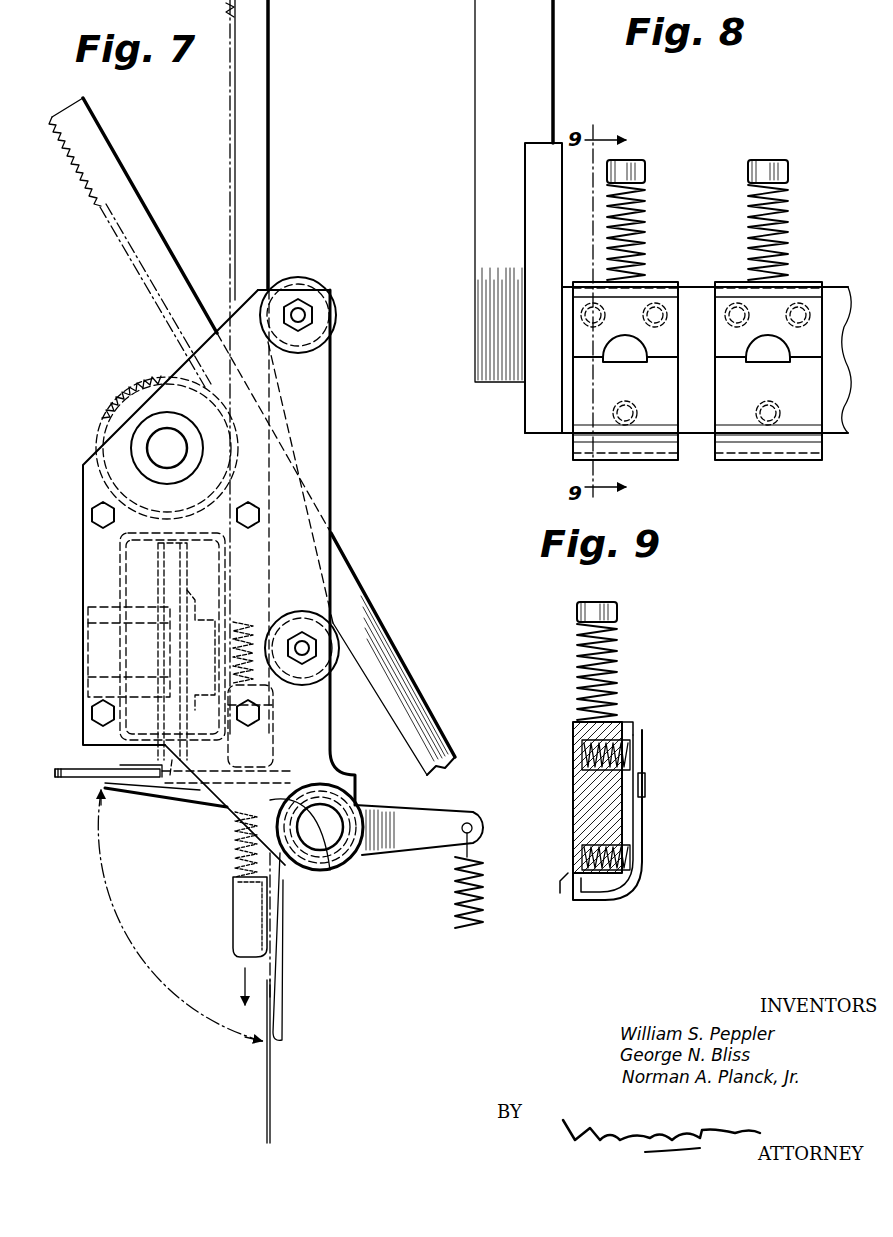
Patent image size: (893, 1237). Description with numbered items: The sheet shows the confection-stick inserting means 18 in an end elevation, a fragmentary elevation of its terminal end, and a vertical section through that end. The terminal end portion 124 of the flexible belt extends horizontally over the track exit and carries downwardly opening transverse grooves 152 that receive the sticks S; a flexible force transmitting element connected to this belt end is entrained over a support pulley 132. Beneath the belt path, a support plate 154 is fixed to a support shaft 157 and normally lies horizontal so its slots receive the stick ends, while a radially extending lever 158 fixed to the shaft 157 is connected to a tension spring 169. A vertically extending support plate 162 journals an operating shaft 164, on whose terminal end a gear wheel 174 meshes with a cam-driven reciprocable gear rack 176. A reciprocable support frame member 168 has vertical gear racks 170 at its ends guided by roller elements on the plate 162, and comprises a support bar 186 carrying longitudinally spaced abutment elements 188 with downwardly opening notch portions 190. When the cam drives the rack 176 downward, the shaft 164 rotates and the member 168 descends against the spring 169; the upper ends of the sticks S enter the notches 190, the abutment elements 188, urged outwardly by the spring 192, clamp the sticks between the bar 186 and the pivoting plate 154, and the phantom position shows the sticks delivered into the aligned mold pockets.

In FIG. 7, the confection-stick inserting means 18 is at (284, 262).
In FIG. 7, the terminal end portion of the belt 124 is at (125, 770).
In FIG. 7, the support pulley 132 is at (160, 590).
In FIG. 7, the transverse grooves 152 is at (127, 792).
In FIG. 7, the support plate 154 is at (190, 790).
In FIG. 7, the support shaft 157 is at (325, 838).
In FIG. 7, the lever 158 is at (427, 818).
In FIG. 7, the support plate 162 is at (305, 425).
In FIG. 7, the operating shaft 164 is at (160, 441).
In FIG. 7, the reciprocable support frame member 168 is at (273, 738).
In FIG. 8, the reciprocable support frame member 168 is at (682, 284).
In FIG. 9, the reciprocable support frame member 168 is at (573, 788).
In FIG. 7, the spring 169 is at (455, 872).
In FIG. 7, the gear racks 170 is at (262, 100).
In FIG. 8, the gear racks 170 is at (487, 25).
In FIG. 7, the gear wheel 174 is at (128, 398).
In FIG. 7, the reciprocable gear rack 176 is at (133, 205).
In FIG. 9, the support bar 186 is at (597, 820).
In FIG. 7, the abutment elements 188 is at (262, 698).
In FIG. 8, the abutment elements 188 is at (725, 347).
In FIG. 9, the abutment elements 188 is at (645, 752).
In FIG. 8, the notch portions 190 is at (635, 360).
In FIG. 9, the notch portions 190 is at (646, 787).
In FIG. 8, the spring 192 is at (697, 220).
In FIG. 9, the spring 192 is at (618, 742).
In FIG. 7, the confection sticks S is at (95, 778).